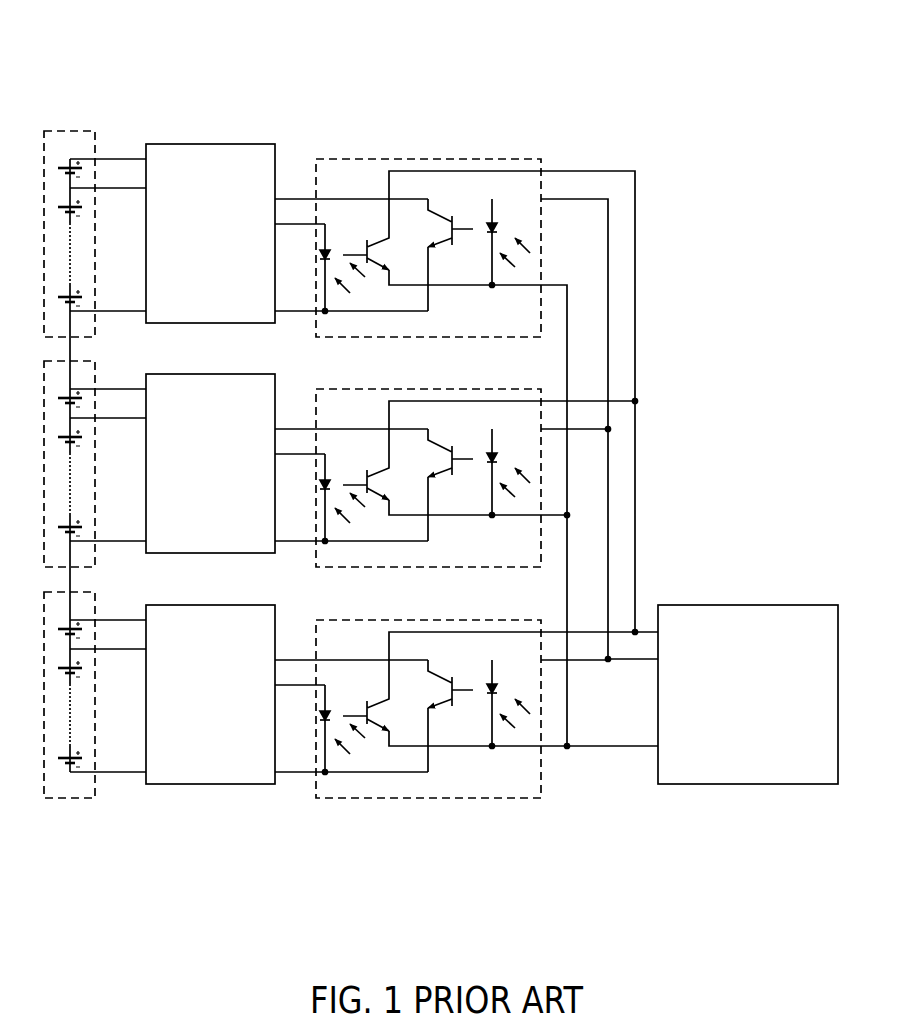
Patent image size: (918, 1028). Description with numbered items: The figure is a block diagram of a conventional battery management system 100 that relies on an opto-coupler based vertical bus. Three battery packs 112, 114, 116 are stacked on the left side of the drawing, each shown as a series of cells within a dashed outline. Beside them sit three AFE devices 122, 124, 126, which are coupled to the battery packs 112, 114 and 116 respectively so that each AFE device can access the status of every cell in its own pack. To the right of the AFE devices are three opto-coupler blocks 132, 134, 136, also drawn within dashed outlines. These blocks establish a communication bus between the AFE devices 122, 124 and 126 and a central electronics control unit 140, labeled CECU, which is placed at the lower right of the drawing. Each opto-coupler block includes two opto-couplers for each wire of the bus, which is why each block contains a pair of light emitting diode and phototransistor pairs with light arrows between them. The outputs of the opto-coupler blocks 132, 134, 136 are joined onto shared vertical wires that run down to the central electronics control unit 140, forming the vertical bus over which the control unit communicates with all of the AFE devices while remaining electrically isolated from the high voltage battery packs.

The battery management system 100 is at (136, 77).
The battery pack 112 is at (72, 592).
The battery pack 114 is at (72, 361).
The battery pack 116 is at (72, 131).
The AFE device 122 is at (258, 605).
The AFE device 124 is at (258, 374).
The AFE device 126 is at (258, 144).
The opto-coupler block 132 is at (510, 620).
The opto-coupler block 134 is at (510, 389).
The opto-coupler block 136 is at (510, 159).
The central electronics control unit 140 is at (790, 605).